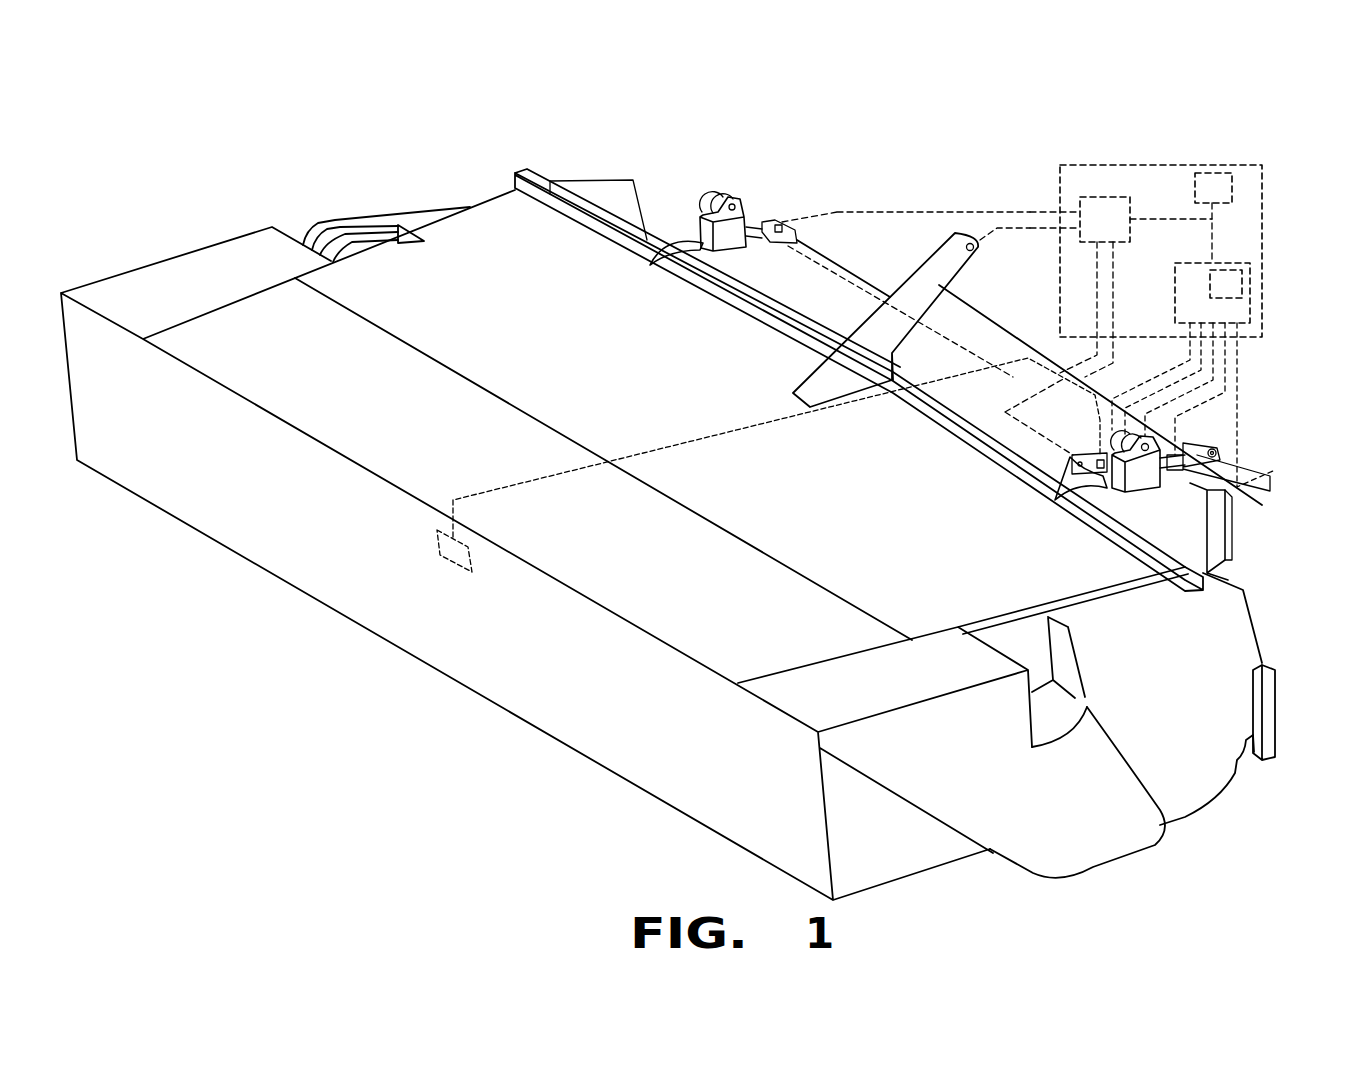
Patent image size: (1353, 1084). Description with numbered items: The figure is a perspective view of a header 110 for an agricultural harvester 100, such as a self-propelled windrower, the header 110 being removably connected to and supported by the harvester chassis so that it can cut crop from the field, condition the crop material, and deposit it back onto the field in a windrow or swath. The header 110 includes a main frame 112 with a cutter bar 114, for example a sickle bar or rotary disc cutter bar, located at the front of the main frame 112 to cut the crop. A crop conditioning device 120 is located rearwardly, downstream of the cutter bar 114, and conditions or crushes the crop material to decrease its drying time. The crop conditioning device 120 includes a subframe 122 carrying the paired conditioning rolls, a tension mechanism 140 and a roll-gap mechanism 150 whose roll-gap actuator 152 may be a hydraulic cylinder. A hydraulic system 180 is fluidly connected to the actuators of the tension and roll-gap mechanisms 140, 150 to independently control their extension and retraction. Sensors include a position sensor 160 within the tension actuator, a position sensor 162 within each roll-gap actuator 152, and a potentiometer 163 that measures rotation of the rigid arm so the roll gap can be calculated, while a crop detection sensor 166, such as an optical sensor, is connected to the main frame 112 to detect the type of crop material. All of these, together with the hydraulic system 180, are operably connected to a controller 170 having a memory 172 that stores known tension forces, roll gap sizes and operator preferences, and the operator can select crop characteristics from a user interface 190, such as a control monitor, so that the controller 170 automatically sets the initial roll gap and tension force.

The agricultural harvester 100 is at (1160, 165).
The header 110 is at (522, 166).
The main frame 112 is at (455, 282).
The cutter bar 114 is at (478, 712).
The crop conditioning device 120 is at (1237, 557).
The subframe 122 is at (848, 268).
The tension mechanism 140 is at (1078, 503).
The roll-gap mechanism 150 is at (740, 180).
The roll-gap actuator 152 is at (777, 217).
The position sensor 160 is at (1113, 493).
The position sensor 162 is at (763, 218).
The potentiometer 163 is at (1233, 497).
The crop detection sensor 166 is at (452, 565).
The controller 170 is at (1248, 315).
The memory 172 is at (1243, 283).
The hydraulic system 180 is at (1103, 197).
The user interface 190 is at (1232, 188).